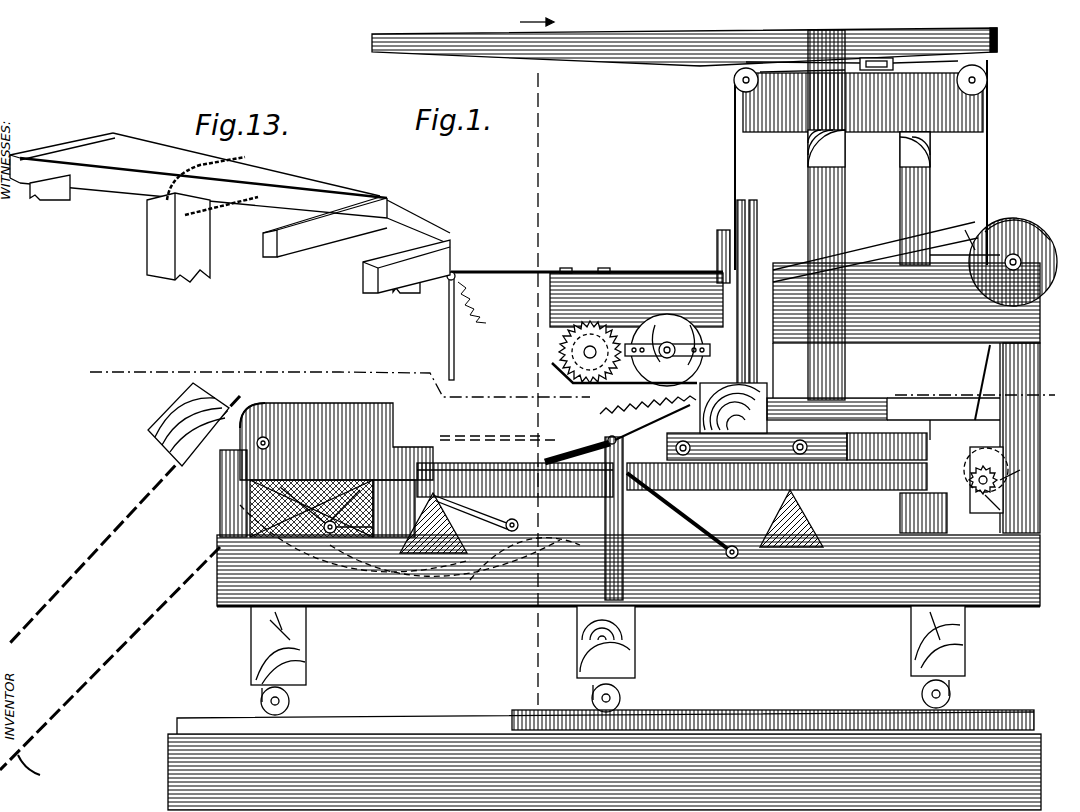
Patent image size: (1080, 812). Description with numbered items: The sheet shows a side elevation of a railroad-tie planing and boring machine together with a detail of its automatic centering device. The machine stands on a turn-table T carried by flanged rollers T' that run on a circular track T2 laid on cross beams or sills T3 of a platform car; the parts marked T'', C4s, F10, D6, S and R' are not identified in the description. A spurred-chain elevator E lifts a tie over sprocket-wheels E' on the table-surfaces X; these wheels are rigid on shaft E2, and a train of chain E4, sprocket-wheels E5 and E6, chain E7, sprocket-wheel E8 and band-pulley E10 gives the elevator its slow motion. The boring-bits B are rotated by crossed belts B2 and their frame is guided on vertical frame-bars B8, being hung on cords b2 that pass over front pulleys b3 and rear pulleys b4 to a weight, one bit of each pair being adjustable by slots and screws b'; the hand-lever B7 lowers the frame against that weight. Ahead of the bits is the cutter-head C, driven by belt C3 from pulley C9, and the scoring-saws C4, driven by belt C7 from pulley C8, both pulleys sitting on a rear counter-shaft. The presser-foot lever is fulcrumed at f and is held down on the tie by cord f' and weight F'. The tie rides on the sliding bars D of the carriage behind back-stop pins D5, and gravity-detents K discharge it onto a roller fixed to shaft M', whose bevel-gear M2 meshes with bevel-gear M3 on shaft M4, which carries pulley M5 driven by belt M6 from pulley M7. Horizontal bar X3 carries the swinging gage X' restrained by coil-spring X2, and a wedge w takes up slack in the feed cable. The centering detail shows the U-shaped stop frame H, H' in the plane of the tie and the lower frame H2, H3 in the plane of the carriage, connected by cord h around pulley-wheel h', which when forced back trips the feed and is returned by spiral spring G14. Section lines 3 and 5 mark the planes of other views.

In FIG. 1, the hand-lever B7 is at (612, 42).
In FIG. 1, the slots and screws b' is at (852, 36).
In FIG. 1, the suspending-cords b2 is at (735, 145).
In FIG. 1, the front pulleys b3 is at (734, 82).
In FIG. 1, the rear pulleys b4 is at (988, 80).
In FIG. 1, the vertical frame-bars B8 is at (820, 215).
In FIG. 1, the augers or boring-bits B is at (717, 242).
In FIG. 1, the crossed belts B2 is at (866, 264).
In FIG. 1, the cutter-head C is at (667, 350).
In FIG. 1, the belt C3 is at (965, 248).
In FIG. 1, the scoring-saws C4 is at (1019, 254).
In FIG. 1, the circular saw C4s is at (560, 351).
In FIG. 1, the belt C7 is at (960, 228).
In FIG. 1, the pulley C8 is at (1014, 212).
In FIG. 1, the pulley C9 is at (1056, 226).
In FIG. 1, the weight F' is at (624, 389).
In FIG. 1, the frame block F10 is at (930, 533).
In FIG. 1, the sliding bars D is at (777, 436).
In FIG. 1, the back-stop pins D5 is at (492, 466).
In FIG. 1, the saw teeth D6 is at (690, 392).
In FIG. 1, the slotted lever S is at (647, 502).
In FIG. 1, the gravity-detents K is at (576, 452).
In FIG. 1, the table-surfaces X is at (336, 430).
In FIG. 1, the swinging gage X' is at (464, 326).
In FIG. 1, the coil-spring X2 is at (484, 300).
In FIG. 1, the horizontal bar X3 is at (501, 272).
In FIG. 1, the elevator E is at (120, 579).
In FIG. 1, the sprocket-wheels E' is at (259, 401).
In FIG. 1, the shaft E2 is at (240, 462).
In FIG. 1, the chain E4 is at (300, 545).
In FIG. 1, the sprocket-wheel E5 is at (330, 535).
In FIG. 1, the sprocket-wheel E6 is at (376, 535).
In FIG. 1, the chain E7 is at (433, 560).
In FIG. 1, the sprocket-wheel E8 is at (512, 533).
In FIG. 1, the band-pulley E10 is at (520, 560).
In FIG. 1, the rod R' is at (529, 567).
In FIG. 1, the spiral spring G14 is at (736, 557).
In FIG. 1, the wedge w is at (820, 548).
In FIG. 1, the turn-table T is at (771, 642).
In FIG. 1, the flanged rollers T' is at (330, 564).
In FIG. 1, the caster wheel T'' is at (605, 697).
In FIG. 1, the circular track T2 is at (760, 712).
In FIG. 1, the cross beams or sills T3 is at (604, 772).
In FIG. 1, the horizontal shaft M' is at (969, 466).
In FIG. 1, the bevel-gear M2 is at (985, 500).
In FIG. 1, the bevel-gear M3 is at (1005, 462).
In FIG. 1, the shaft M4 is at (1002, 480).
In FIG. 1, the pulley M5 is at (1003, 505).
In FIG. 1, the belt M6 is at (1040, 380).
In FIG. 1, the pulley M7 is at (1040, 292).
In FIG. 1, the fulcrum f is at (806, 370).
In FIG. 1, the cord f' is at (965, 382).
In FIG. 1, the U-shaped frame H is at (940, 393).
In FIG. 13, the U-shaped frame H is at (198, 175).
In FIG. 1, the U-shaped frame arms H' is at (827, 393).
In FIG. 13, the U-shaped frame arms H' is at (198, 201).
In FIG. 1, the U-shaped frame H2 is at (931, 422).
In FIG. 13, the U-shaped frame H2 is at (400, 236).
In FIG. 1, the U-shaped frame arms H3 is at (887, 446).
In FIG. 13, the U-shaped frame arms H3 is at (68, 190).
In FIG. 13, the cord h is at (215, 195).
In FIG. 13, the pulley-wheel h' is at (160, 237).
In FIG. 1, the section line 3 is at (569, 389).
In FIG. 1, the section line 5 is at (537, 13).